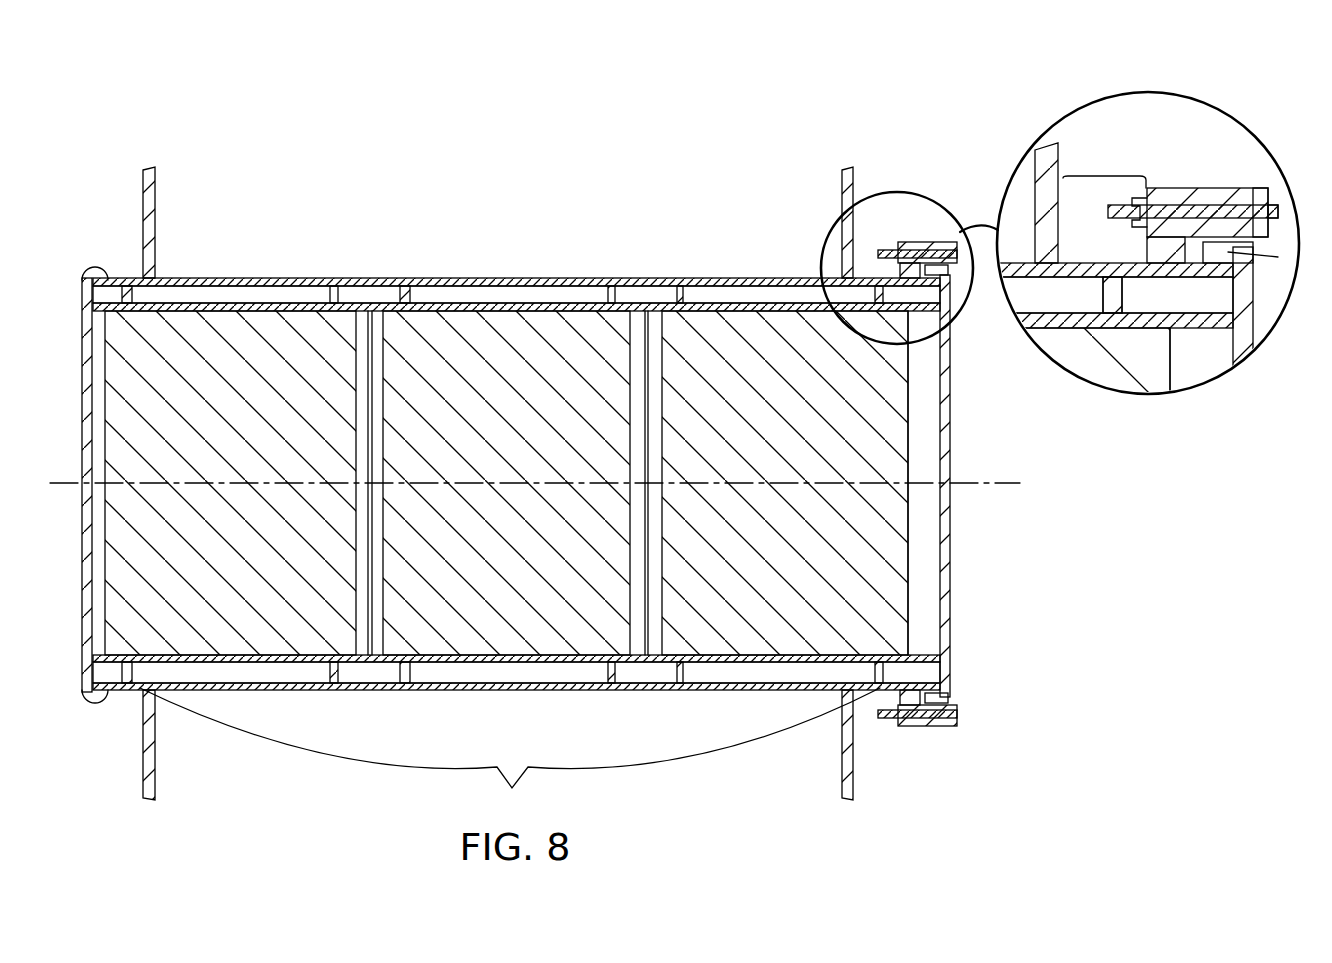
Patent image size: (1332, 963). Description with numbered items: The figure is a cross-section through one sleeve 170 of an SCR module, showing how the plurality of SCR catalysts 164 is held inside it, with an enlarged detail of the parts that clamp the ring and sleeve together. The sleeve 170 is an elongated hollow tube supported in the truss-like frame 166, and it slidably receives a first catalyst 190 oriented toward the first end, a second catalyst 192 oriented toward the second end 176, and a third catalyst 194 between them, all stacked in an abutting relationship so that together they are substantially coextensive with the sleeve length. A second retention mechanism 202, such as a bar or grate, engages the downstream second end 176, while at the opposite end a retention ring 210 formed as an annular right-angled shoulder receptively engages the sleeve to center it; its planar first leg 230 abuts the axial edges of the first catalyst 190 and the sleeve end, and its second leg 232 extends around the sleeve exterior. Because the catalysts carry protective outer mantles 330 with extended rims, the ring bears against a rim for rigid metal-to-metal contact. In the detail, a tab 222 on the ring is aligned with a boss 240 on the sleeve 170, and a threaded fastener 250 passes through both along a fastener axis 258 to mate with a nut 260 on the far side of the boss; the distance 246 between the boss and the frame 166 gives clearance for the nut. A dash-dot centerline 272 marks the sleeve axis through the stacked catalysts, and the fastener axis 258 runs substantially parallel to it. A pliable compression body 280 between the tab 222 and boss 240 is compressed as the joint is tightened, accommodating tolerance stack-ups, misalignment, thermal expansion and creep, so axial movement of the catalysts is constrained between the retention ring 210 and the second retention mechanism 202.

The plurality of SCR catalysts 164 is at (516, 551).
The frame 166 is at (152, 218).
The sleeve 170 is at (482, 690).
The second end 176 is at (84, 692).
The first catalyst 190 is at (726, 340).
The second catalyst 192 is at (512, 340).
The third catalyst 194 is at (206, 340).
The second retention mechanism 202 is at (84, 320).
The retention ring 210 is at (1252, 345).
The tab 222 is at (1225, 200).
The first leg 230 is at (1250, 292).
The second leg 232 is at (1262, 250).
The boss 240 is at (1160, 188).
The distance 246 is at (1102, 180).
The threaded fastener 250 is at (1258, 205).
The fastener axis 258 is at (1275, 212).
The nut 260 is at (1142, 186).
The centerline axis 272 is at (965, 483).
The compression body 280 is at (1192, 205).
The protective outer mantle 330 is at (283, 305).